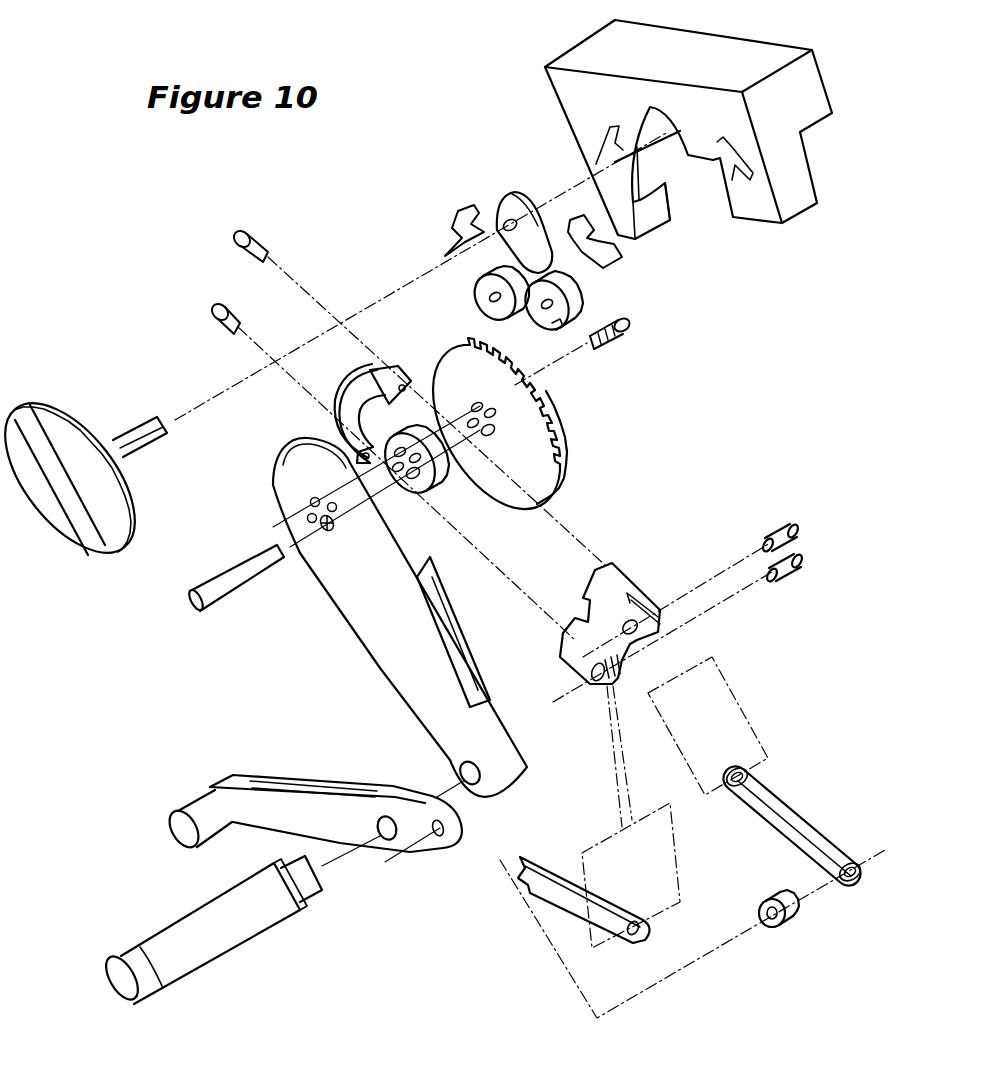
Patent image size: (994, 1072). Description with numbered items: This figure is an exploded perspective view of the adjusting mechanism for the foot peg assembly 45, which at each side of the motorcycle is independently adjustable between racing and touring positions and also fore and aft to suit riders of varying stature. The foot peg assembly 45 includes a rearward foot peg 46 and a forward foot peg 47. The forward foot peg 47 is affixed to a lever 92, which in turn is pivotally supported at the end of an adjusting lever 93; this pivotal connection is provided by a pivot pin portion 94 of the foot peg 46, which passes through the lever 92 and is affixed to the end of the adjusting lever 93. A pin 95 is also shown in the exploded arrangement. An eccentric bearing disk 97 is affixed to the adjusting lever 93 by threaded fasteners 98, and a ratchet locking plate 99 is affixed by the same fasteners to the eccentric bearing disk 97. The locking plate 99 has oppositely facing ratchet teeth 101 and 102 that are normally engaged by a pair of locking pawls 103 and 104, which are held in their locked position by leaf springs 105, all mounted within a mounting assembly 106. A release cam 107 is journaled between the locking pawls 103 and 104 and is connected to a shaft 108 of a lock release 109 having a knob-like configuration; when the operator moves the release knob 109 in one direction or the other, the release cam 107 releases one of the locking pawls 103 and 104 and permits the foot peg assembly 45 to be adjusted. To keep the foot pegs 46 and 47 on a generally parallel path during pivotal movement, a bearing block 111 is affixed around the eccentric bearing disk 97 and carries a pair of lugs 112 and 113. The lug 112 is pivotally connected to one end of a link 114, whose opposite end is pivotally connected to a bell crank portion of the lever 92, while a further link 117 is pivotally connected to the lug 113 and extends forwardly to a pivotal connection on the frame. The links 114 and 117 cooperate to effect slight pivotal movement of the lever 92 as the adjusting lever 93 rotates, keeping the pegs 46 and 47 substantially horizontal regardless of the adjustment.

The foot peg assembly 45 is at (770, 379).
The rearward foot peg 46 is at (232, 937).
The forward foot peg 47 is at (207, 810).
The lever 92 is at (303, 807).
The adjusting lever 93 is at (387, 660).
The pivot pin portion 94 is at (310, 880).
The pin 95 is at (235, 577).
The eccentric bearing disk 97 is at (443, 473).
The threaded fasteners 98 is at (606, 342).
The ratchet locking plate 99 is at (530, 483).
The ratchet teeth 101 is at (473, 353).
The ratchet teeth 102 is at (542, 420).
The locking pawl 103 is at (477, 287).
The locking pawl 104 is at (580, 297).
The leaf springs 105 is at (455, 220).
The mounting assembly 106 is at (566, 93).
The release cam 107 is at (523, 202).
The shaft 108 is at (133, 427).
The lock release 109 is at (55, 420).
The bearing block 111 is at (617, 580).
The lug 112 is at (653, 607).
The lug 113 is at (603, 700).
The link 114 is at (807, 810).
The further link 117 is at (570, 897).